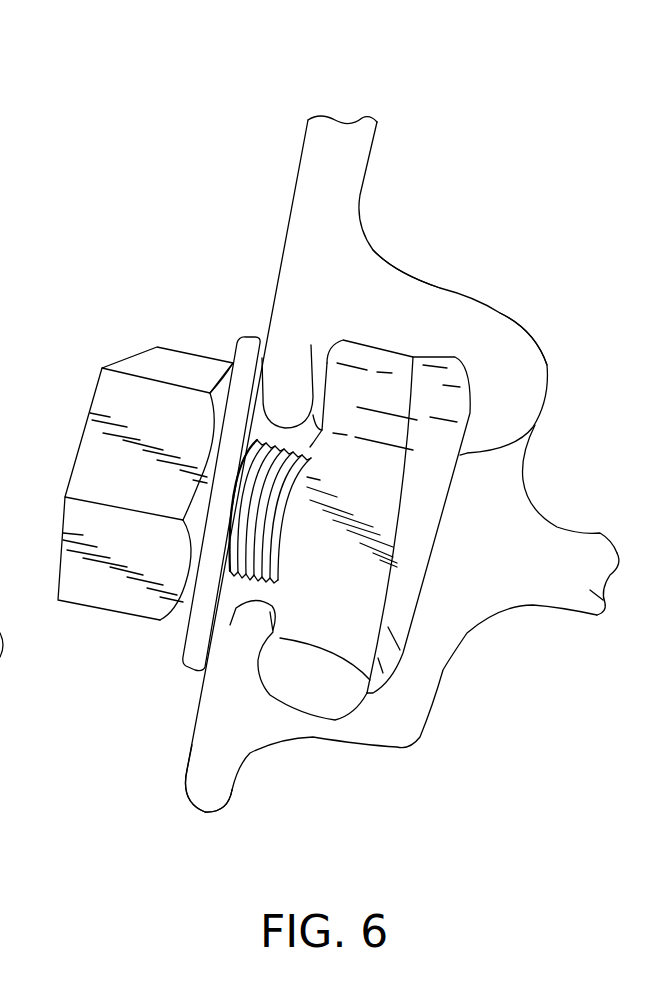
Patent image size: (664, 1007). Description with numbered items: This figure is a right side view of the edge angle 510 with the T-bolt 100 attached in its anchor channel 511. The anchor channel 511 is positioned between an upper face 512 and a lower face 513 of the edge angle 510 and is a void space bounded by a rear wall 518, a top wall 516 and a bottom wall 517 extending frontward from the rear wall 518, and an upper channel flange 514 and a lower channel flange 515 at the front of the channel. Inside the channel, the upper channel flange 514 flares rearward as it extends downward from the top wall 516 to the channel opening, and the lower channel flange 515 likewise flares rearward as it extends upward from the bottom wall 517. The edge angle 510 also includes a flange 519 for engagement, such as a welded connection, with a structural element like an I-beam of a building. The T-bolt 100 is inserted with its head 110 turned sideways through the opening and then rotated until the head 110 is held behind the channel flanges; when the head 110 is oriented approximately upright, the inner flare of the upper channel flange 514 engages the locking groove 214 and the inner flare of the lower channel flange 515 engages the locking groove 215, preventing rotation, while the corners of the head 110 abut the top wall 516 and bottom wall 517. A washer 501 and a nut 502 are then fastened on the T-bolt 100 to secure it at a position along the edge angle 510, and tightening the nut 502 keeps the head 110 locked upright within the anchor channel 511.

The T-bolt 100 is at (355, 590).
The head 110 is at (395, 544).
The locking groove 214 is at (311, 345).
The locking groove 215 is at (377, 675).
The washer 501 is at (190, 645).
The nut 502 is at (63, 530).
The edge angle 510 is at (360, 108).
The anchor channel 511 is at (463, 373).
The upper face 512 is at (298, 175).
The lower face 513 is at (178, 768).
The upper channel flange 514 is at (228, 395).
The lower channel flange 515 is at (238, 606).
The top wall 516 is at (428, 312).
The bottom wall 517 is at (320, 727).
The rear wall 518 is at (533, 427).
The flange 519 is at (604, 601).